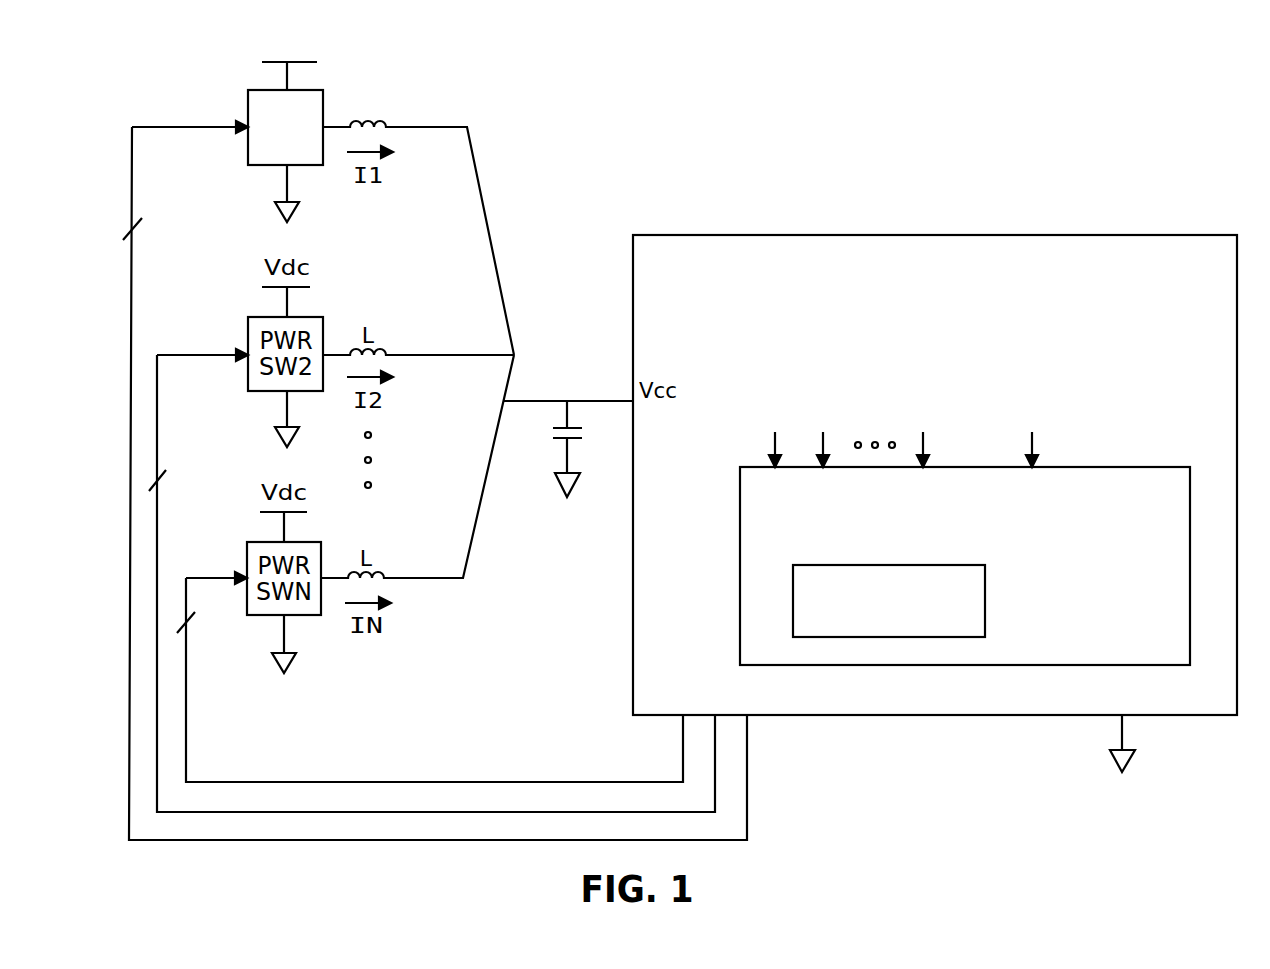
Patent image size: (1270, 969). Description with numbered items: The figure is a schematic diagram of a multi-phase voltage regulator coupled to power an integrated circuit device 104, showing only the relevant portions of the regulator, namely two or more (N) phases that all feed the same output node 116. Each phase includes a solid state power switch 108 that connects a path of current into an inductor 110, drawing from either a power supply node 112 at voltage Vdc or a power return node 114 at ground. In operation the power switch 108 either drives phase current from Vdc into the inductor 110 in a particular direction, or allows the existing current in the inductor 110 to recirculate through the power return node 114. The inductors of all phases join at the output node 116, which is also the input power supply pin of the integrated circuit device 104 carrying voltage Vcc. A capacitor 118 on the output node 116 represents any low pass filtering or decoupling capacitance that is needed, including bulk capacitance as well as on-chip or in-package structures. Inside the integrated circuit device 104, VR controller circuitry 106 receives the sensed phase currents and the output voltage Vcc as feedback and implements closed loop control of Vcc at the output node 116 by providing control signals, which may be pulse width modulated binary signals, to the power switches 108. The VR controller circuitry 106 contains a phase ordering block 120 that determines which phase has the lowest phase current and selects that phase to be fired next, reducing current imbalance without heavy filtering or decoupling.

The integrated circuit device 104 is at (918, 342).
The VR controller circuitry 106 is at (1045, 528).
The power switch 108 is at (248, 93).
The inductor 110 is at (388, 127).
The power supply node 112 is at (317, 62).
The power return node 114 is at (290, 195).
The output node 116 is at (540, 401).
The capacitor 118 is at (562, 470).
The phase ordering block 120 is at (941, 628).